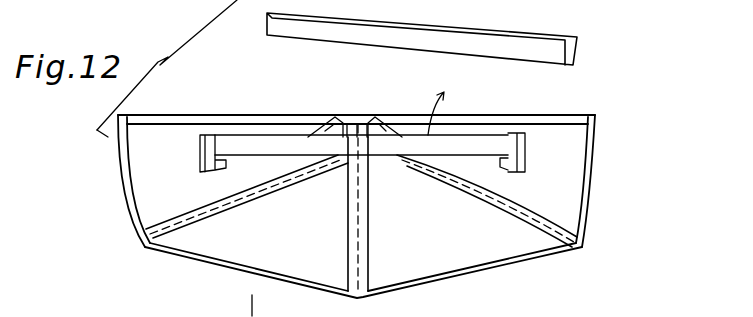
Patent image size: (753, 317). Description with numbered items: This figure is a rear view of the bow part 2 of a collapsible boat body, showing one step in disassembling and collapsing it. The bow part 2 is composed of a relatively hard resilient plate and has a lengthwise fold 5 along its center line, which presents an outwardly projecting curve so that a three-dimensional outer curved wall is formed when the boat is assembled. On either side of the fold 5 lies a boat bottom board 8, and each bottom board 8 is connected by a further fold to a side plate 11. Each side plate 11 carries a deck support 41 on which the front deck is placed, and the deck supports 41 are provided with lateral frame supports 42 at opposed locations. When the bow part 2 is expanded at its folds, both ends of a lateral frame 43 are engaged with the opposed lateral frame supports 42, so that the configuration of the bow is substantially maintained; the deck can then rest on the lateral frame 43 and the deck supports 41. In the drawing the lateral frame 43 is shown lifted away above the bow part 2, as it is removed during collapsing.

The bow part 2 is at (608, 104).
The fold 5 is at (363, 296).
The boat bottom board 8 is at (247, 248).
The side plate 11 is at (133, 195).
The deck support 41 is at (520, 138).
The lateral frame support 42 is at (527, 153).
The lateral frame 43 is at (447, 42).